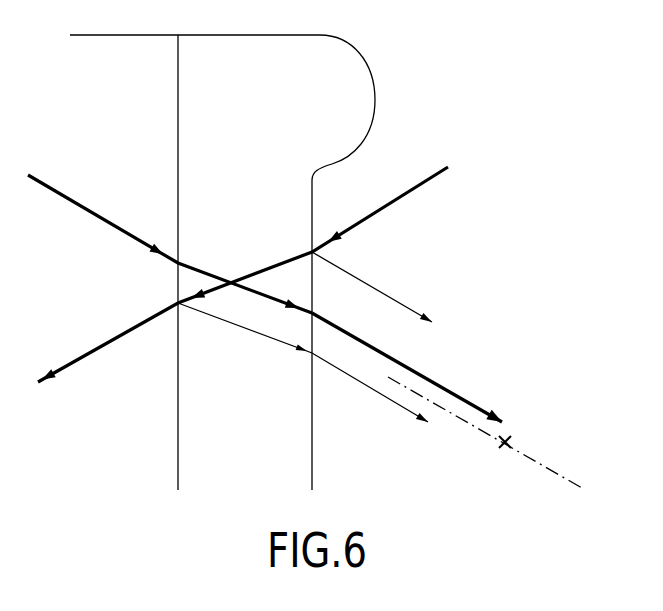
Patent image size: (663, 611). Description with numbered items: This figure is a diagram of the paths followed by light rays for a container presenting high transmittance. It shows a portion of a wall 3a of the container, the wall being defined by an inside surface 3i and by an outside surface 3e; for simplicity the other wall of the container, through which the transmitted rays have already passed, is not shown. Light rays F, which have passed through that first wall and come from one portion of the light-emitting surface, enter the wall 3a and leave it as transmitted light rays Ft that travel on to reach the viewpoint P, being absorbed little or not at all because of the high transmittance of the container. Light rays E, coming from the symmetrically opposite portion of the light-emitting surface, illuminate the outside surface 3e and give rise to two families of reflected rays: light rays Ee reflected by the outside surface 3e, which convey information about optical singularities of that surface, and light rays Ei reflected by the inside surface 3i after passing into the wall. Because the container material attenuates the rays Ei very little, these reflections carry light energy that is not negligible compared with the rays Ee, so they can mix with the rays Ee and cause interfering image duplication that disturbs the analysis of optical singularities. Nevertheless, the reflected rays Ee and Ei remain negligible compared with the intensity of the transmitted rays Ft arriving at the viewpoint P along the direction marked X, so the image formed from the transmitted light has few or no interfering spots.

The inside surface 3i is at (178, 103).
The outside surface 3e is at (313, 195).
The wall 3a is at (192, 432).
The light rays F is at (70, 199).
The transmitted light rays Ft is at (451, 392).
The light rays E is at (421, 183).
The light rays reflected by the outside surface Ee is at (398, 302).
The light rays reflected by the inside surface Ei is at (396, 404).
The optical axis X is at (574, 482).
The viewpoint P is at (508, 437).